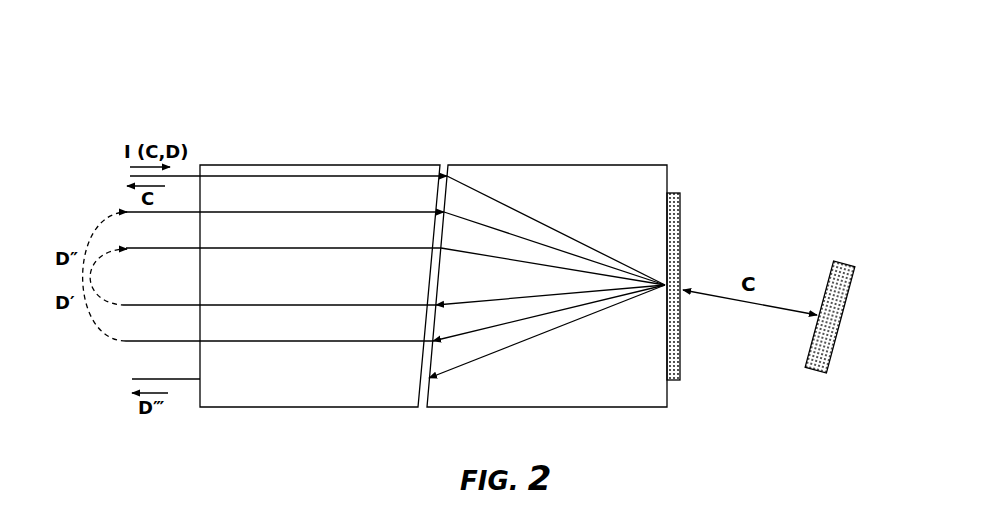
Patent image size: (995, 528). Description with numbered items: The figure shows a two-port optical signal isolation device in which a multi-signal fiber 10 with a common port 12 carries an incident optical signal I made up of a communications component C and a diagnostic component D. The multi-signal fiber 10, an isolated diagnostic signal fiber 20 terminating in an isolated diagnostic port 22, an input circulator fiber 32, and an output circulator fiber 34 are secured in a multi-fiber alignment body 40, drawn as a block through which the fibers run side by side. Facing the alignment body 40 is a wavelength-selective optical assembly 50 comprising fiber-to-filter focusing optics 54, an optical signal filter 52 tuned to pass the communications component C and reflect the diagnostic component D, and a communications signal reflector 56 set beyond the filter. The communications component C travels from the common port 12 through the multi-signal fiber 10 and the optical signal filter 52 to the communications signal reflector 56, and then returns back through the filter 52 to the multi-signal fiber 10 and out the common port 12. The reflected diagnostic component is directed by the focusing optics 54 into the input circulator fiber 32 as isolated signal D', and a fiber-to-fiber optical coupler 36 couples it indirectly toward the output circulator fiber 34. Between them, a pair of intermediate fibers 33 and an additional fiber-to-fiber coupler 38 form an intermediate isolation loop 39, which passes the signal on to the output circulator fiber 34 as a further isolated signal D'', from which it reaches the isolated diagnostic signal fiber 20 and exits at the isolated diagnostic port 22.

The multi-signal fiber 10 is at (183, 175).
The common port 12 is at (121, 168).
The isolated diagnostic signal fiber 20 is at (187, 381).
The isolated diagnostic port 22 is at (121, 389).
The input circulator fiber 32 is at (241, 341).
The intermediate fibers 33 is at (237, 249).
The output circulator fiber 34 is at (240, 212).
The fiber-to-fiber optical coupler 36 is at (88, 320).
The additional fiber-to-fiber coupler 38 is at (94, 228).
The intermediate isolation loop 39 is at (168, 284).
The multi-fiber alignment body 40 is at (293, 164).
The wavelength-selective optical assembly 50 is at (550, 255).
The optical signal filter 52 is at (676, 194).
The fiber-to-filter focusing optics 54 is at (614, 397).
The communications signal reflector 56 is at (843, 270).